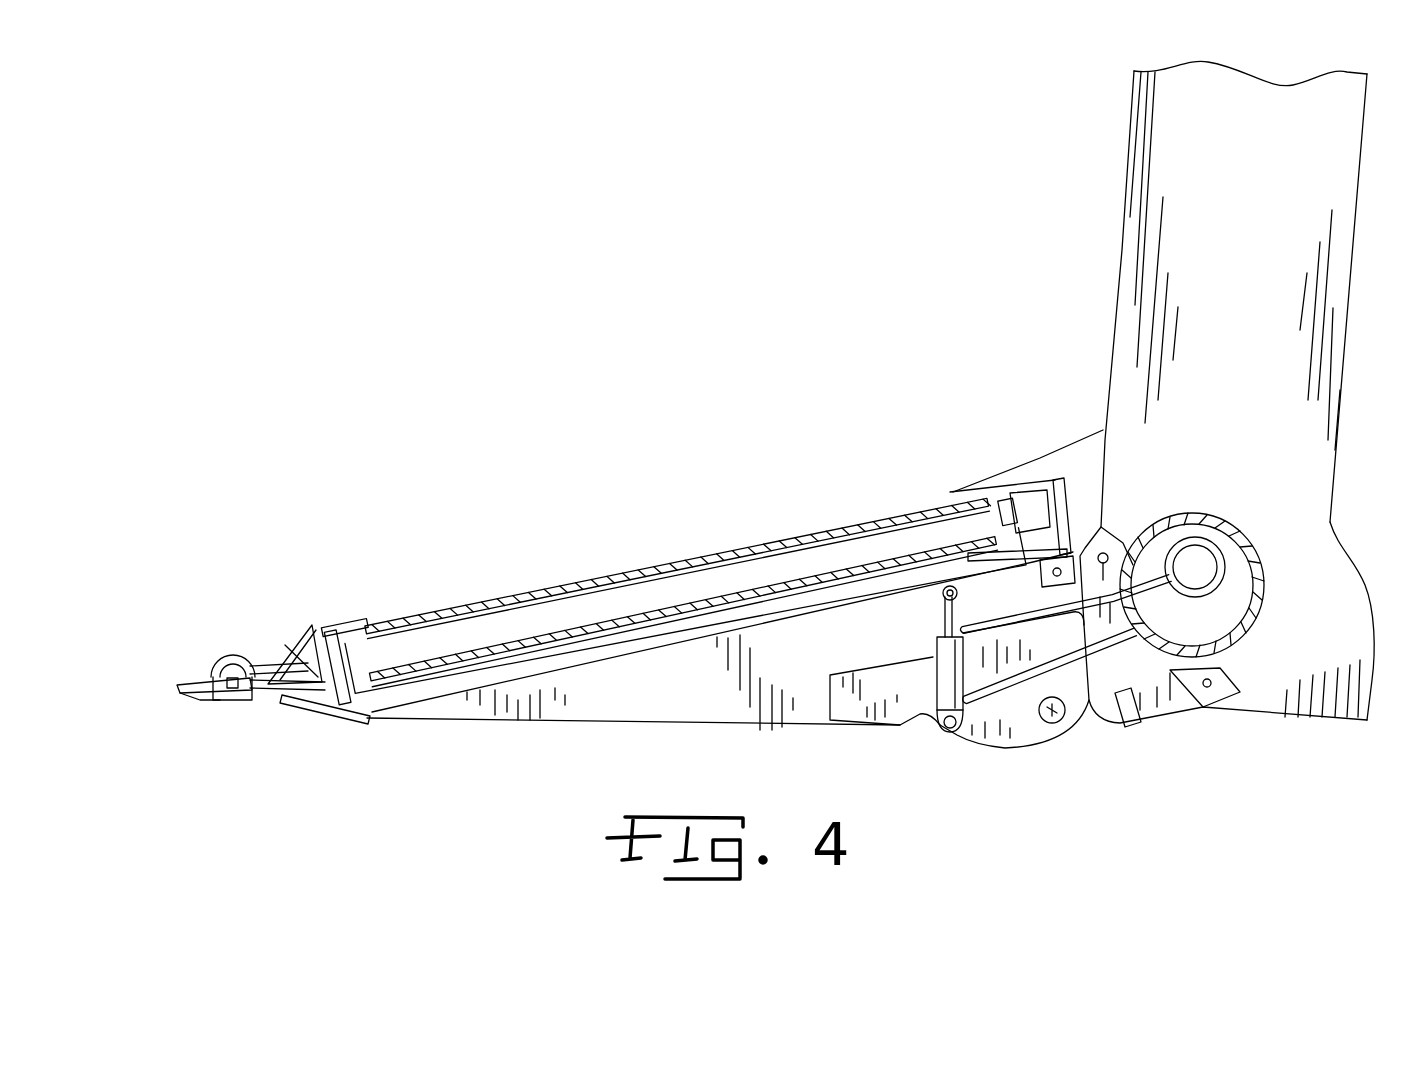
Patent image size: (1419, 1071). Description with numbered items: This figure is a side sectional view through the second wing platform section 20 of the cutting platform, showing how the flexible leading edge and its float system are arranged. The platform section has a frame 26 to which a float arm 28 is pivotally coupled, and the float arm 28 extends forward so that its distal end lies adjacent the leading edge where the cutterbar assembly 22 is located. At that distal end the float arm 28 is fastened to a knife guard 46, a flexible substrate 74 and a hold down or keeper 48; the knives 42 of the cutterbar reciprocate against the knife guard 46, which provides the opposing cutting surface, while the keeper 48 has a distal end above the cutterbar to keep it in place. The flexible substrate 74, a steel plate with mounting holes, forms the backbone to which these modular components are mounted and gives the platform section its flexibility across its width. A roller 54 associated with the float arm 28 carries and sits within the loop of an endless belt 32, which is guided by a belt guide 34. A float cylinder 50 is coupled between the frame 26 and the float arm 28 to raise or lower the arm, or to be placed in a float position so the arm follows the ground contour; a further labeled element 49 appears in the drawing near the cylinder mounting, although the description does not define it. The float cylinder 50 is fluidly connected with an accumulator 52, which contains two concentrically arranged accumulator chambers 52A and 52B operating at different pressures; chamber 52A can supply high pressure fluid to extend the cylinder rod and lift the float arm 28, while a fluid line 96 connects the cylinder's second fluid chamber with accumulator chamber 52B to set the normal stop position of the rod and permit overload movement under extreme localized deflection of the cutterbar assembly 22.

The second wing platform section 20 is at (1187, 390).
The cutterbar assembly 22 is at (232, 714).
The frame 26 is at (1162, 227).
The float arm 28 is at (548, 728).
The endless belt 32 is at (748, 545).
The belt guide 34 is at (347, 627).
The knife 42 is at (215, 683).
The knife guard 46 is at (190, 703).
The keeper 48 is at (233, 657).
The pivot pin 49 is at (1048, 715).
The float cylinder 50 is at (943, 680).
The accumulator 52 is at (1255, 547).
The accumulator chamber 52A is at (1218, 605).
The accumulator chamber 52B is at (1197, 568).
The roller 54 is at (583, 607).
The flexible substrate 74 is at (298, 670).
The fluid line 96 is at (1020, 608).